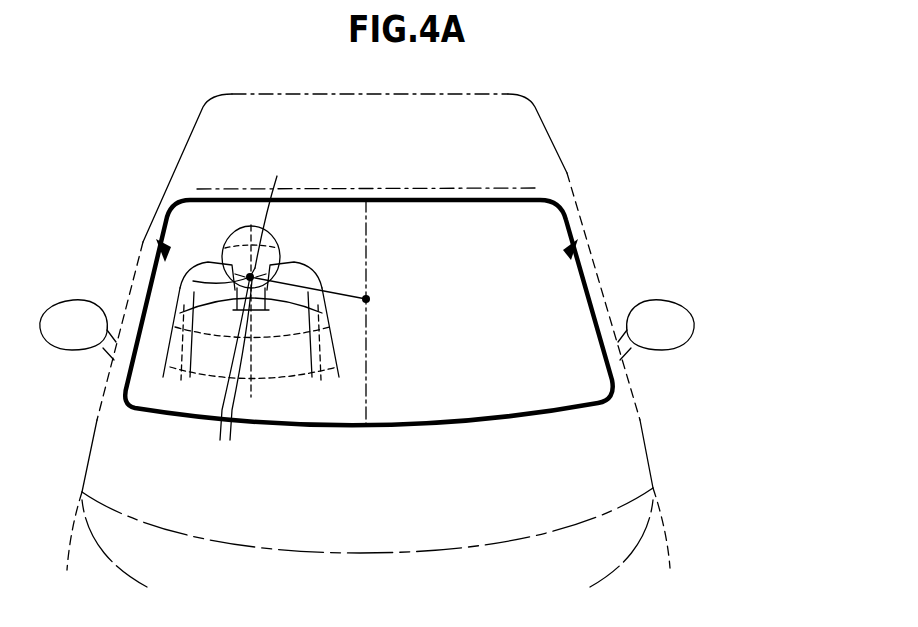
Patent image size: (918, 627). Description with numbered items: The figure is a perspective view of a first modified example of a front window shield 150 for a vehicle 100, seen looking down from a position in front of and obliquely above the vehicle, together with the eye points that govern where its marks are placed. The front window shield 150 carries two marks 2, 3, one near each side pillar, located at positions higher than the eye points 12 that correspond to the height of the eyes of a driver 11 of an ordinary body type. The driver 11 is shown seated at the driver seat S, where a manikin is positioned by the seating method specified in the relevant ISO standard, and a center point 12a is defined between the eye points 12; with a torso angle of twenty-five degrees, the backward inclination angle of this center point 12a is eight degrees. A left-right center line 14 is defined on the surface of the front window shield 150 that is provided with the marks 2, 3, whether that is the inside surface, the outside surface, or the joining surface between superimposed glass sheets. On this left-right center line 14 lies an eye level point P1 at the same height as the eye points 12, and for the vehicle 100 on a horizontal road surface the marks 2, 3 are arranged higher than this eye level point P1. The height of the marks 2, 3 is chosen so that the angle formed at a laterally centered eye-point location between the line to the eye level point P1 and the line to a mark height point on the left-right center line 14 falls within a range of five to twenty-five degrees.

The vehicle 100 is at (543, 100).
The front window shield 150 is at (555, 202).
The mark 2 is at (573, 248).
The mark 3 is at (160, 246).
The driver seat S is at (193, 281).
The driver 11 is at (240, 228).
The center point 12a is at (282, 209).
The eye point 12 is at (269, 370).
The eye level point P1 is at (368, 300).
The left-right center line 14 is at (369, 380).